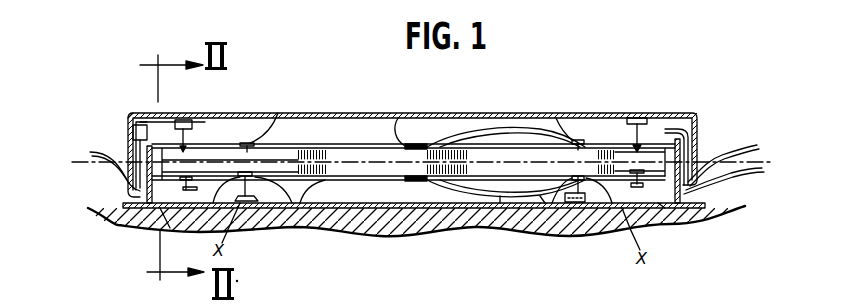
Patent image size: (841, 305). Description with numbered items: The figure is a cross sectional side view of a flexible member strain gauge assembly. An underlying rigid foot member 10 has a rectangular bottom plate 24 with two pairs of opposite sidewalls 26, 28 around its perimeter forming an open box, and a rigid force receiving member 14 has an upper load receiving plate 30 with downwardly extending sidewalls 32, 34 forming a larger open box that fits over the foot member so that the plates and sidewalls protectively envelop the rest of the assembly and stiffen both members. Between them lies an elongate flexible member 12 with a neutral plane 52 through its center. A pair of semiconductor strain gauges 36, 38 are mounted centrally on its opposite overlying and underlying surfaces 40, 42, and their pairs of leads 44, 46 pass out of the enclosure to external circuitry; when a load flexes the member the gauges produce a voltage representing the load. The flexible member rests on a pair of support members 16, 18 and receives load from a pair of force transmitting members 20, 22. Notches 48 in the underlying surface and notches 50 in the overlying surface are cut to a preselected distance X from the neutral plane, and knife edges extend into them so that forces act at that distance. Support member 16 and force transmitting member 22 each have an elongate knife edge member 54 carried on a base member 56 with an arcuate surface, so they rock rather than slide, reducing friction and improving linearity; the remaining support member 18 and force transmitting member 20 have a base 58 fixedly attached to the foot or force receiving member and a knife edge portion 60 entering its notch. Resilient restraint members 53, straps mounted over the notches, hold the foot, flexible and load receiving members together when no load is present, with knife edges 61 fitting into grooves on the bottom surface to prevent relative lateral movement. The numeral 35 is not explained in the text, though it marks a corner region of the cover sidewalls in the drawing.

The foot member 10 is at (422, 228).
The flexible member 12 is at (369, 170).
The force receiving member 14 is at (345, 113).
The support member 16 is at (249, 200).
The support member 18 is at (542, 196).
The force transmitting member 20 is at (196, 119).
The force transmitting member 22 is at (618, 117).
The bottom plate 24 is at (468, 210).
The sidewalls 26 is at (658, 207).
The sidewalls 28 is at (124, 203).
The force receiving plate 30 is at (473, 113).
The sidewalls 32 is at (378, 126).
The sidewalls 34 is at (128, 140).
The cover corner 35 is at (128, 115).
The strain gauge 36 is at (418, 143).
The strain gauge 38 is at (430, 182).
The overlying surface 40 is at (331, 150).
The underlying surface 42 is at (325, 200).
The leads 44 is at (512, 128).
The leads 46 is at (500, 210).
The notches 48 is at (303, 205).
The notches 50 is at (188, 152).
The neutral plane 52 is at (84, 153).
The restraint members 53 is at (278, 113).
The knife edge member 54 is at (600, 145).
The base member 56 is at (656, 120).
The base 58 is at (572, 202).
The knife edge portion 60 is at (172, 136).
The knife edges 61 is at (167, 228).